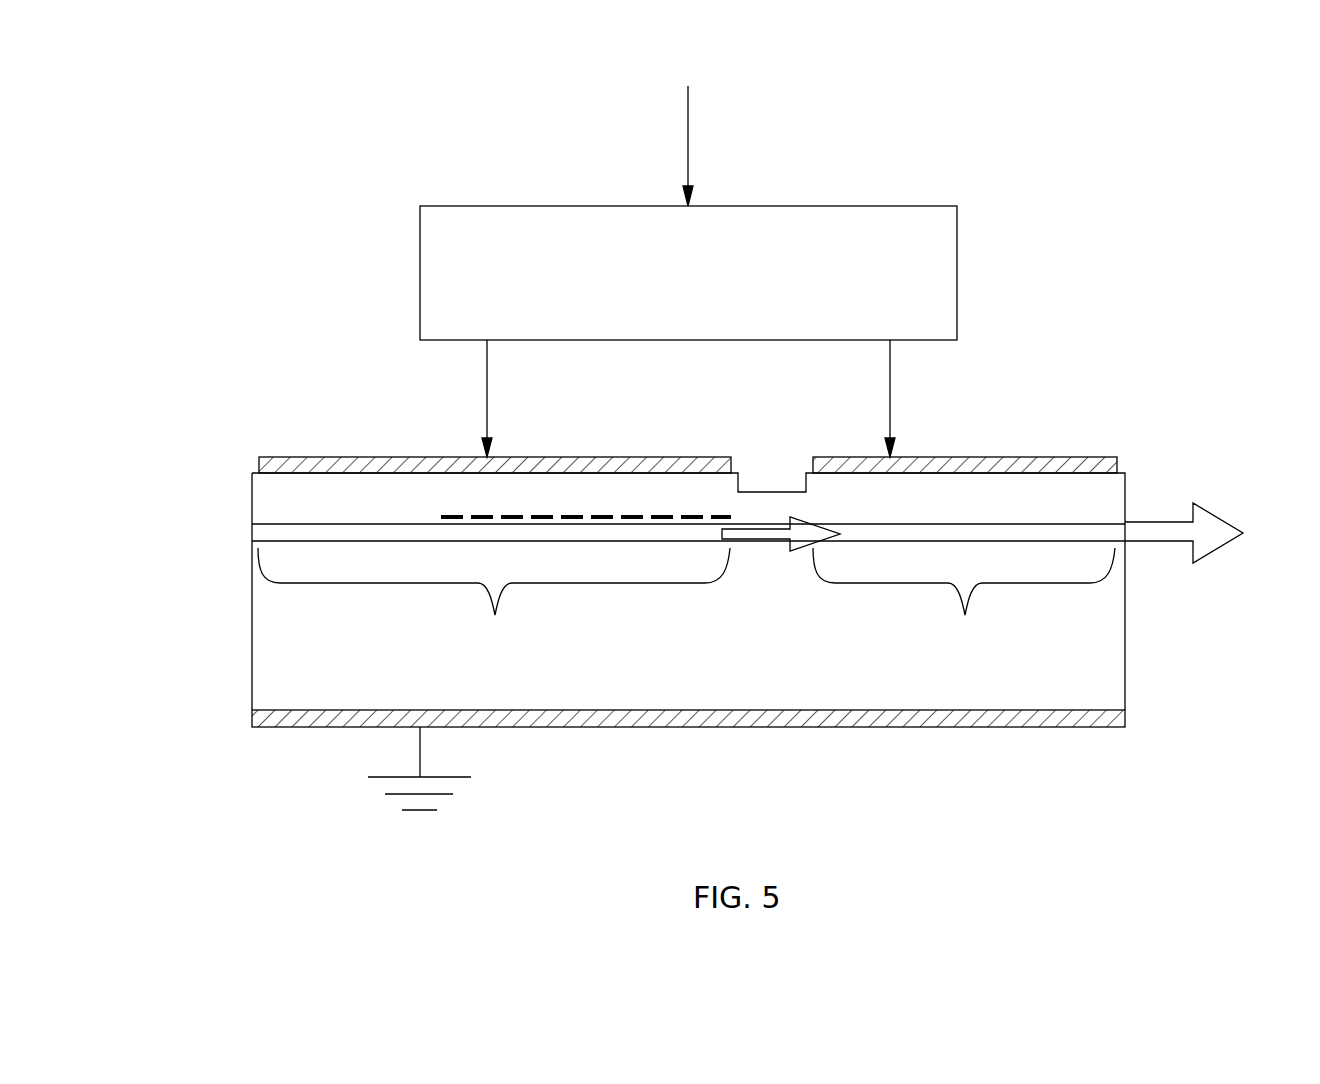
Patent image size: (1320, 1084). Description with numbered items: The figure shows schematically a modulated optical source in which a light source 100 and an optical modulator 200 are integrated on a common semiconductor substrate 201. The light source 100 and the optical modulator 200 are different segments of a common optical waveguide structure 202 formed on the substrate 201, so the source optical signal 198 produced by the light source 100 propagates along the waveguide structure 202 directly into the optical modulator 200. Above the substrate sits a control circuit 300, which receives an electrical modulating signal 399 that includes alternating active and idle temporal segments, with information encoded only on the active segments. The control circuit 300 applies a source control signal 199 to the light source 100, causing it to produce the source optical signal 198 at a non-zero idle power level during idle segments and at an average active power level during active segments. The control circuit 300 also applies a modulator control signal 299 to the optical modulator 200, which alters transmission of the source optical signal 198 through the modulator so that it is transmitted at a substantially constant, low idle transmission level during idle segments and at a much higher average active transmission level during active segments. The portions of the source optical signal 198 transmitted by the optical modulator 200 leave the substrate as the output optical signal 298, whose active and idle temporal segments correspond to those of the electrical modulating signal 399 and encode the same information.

The control circuit 300 is at (708, 289).
The electrical modulating signal 399 is at (688, 128).
The source control signal 199 is at (487, 387).
The modulator control signal 299 is at (890, 388).
The semiconductor substrate 201 is at (776, 680).
The optical waveguide structure 202 is at (315, 533).
The light source 100 is at (494, 583).
The optical modulator 200 is at (964, 599).
The source optical signal 198 is at (763, 533).
The output optical signal 298 is at (1169, 537).